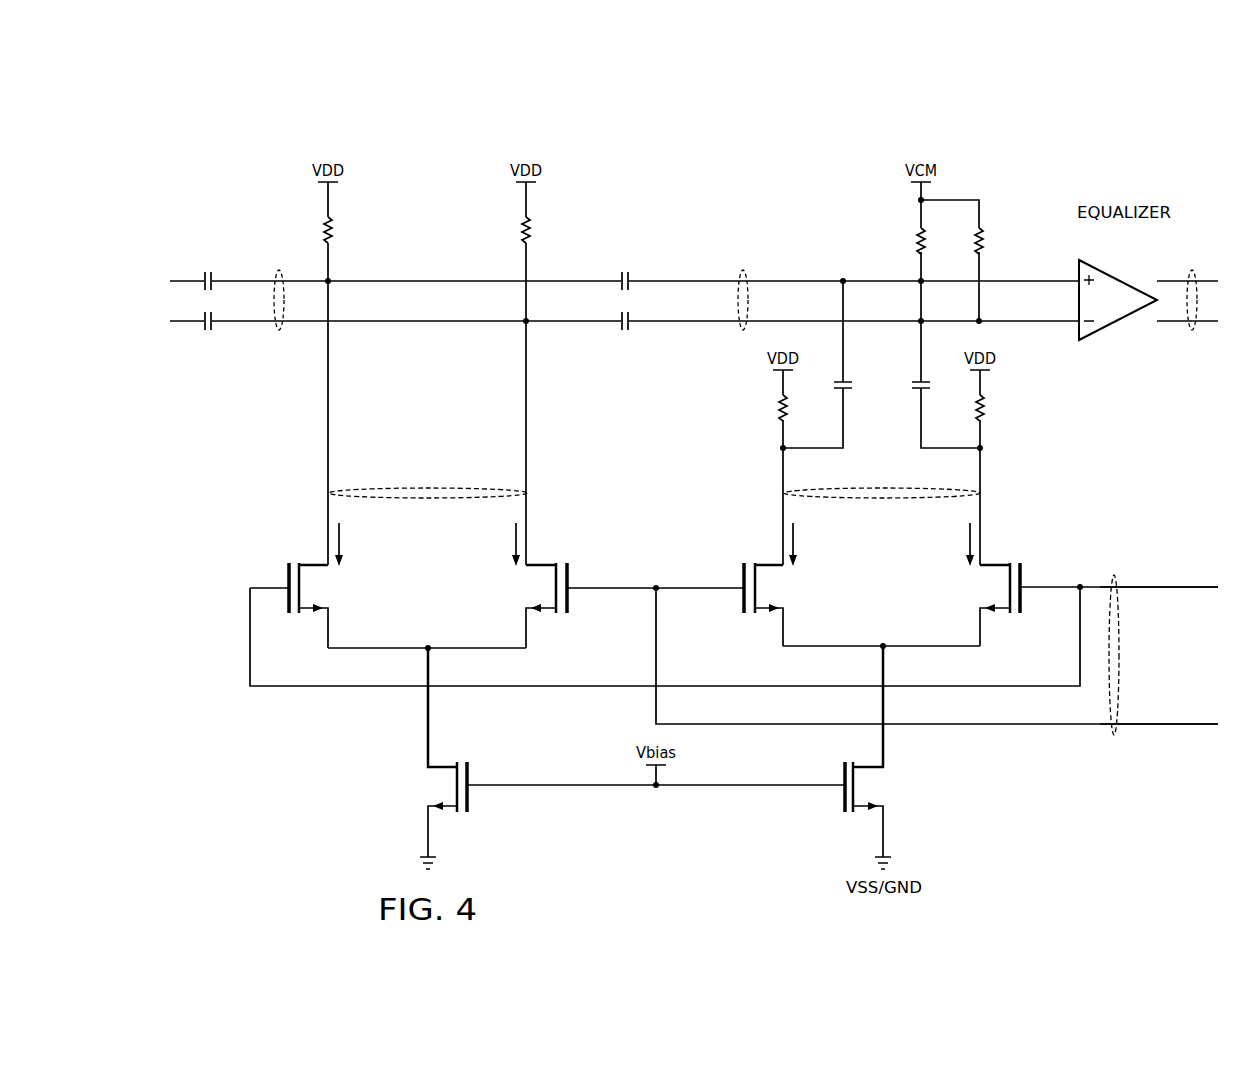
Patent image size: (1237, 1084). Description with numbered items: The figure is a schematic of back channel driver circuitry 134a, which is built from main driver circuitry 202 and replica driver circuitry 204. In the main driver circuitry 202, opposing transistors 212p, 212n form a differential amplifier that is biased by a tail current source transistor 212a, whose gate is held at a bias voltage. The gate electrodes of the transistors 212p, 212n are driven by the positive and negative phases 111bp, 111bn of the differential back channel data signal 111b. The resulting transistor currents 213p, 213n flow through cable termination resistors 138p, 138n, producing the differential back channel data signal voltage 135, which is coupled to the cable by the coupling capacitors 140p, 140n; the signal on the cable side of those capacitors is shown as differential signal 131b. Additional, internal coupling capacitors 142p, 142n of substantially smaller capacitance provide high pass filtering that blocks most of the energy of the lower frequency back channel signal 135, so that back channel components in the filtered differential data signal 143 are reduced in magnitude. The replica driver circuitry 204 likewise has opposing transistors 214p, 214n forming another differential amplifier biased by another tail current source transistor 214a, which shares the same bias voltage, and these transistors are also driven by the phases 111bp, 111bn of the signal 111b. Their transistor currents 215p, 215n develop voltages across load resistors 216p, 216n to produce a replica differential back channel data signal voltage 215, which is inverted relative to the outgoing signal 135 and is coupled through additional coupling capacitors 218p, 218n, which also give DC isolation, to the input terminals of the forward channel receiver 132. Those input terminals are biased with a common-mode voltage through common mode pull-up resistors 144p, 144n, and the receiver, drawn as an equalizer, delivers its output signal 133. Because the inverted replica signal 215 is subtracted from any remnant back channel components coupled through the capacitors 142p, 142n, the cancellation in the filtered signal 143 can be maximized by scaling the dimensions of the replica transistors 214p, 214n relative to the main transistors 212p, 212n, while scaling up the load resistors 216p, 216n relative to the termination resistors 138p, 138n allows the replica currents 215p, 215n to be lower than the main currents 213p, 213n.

The back channel driver circuitry 134a is at (1064, 156).
The coupling capacitor 140p is at (205, 268).
The coupling capacitor 140n is at (206, 332).
The differential input signal 131b is at (277, 270).
The cable termination resistor 138p is at (334, 230).
The cable termination resistor 138n is at (522, 230).
The additional coupling capacitor 142p is at (622, 268).
The additional coupling capacitor 142n is at (622, 332).
The filtered differential data signal 143 is at (742, 270).
The common mode pull-up resistor 144p is at (917, 237).
The common mode pull-up resistor 144n is at (986, 237).
The forward channel receiver 132 is at (1100, 264).
The equalizer output signal 133 is at (1204, 269).
The additional coupling capacitor 218n is at (854, 384).
The additional coupling capacitor 218p is at (906, 386).
The load resistor 216n is at (776, 408).
The load resistor 216p is at (986, 405).
The differential back channel data signal voltage 135 is at (322, 493).
The replica differential back channel data signal voltage 215 is at (988, 493).
The transistor current 213p is at (343, 542).
The transistor current 213n is at (514, 542).
The transistor current 215n is at (798, 542).
The transistor current 215p is at (967, 542).
The transistor 212p is at (287, 578).
The transistor 212n is at (568, 581).
The main driver circuitry 202 is at (447, 617).
The transistor 214n is at (740, 581).
The transistor 214p is at (1022, 578).
The replica driver circuitry 204 is at (902, 617).
The tail current source transistor 212a is at (472, 801).
The tail current source transistor 214a is at (840, 801).
The positive phase of the differential back channel data signal 111bp is at (1188, 590).
The negative phase of the differential back channel data signal 111bn is at (1188, 727).
The differential back channel data signal 111b is at (1114, 736).